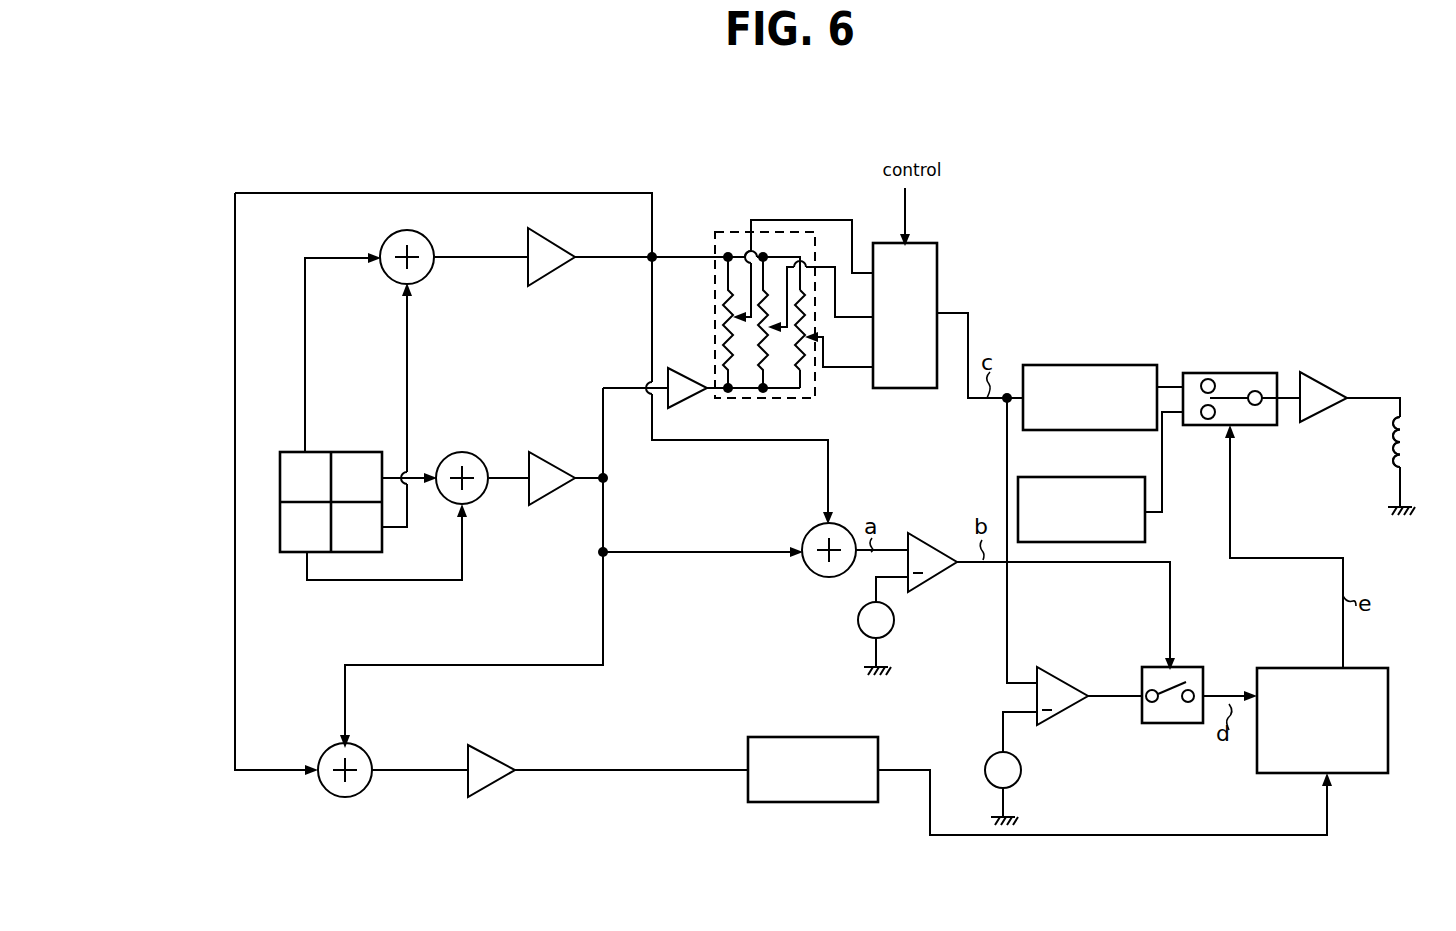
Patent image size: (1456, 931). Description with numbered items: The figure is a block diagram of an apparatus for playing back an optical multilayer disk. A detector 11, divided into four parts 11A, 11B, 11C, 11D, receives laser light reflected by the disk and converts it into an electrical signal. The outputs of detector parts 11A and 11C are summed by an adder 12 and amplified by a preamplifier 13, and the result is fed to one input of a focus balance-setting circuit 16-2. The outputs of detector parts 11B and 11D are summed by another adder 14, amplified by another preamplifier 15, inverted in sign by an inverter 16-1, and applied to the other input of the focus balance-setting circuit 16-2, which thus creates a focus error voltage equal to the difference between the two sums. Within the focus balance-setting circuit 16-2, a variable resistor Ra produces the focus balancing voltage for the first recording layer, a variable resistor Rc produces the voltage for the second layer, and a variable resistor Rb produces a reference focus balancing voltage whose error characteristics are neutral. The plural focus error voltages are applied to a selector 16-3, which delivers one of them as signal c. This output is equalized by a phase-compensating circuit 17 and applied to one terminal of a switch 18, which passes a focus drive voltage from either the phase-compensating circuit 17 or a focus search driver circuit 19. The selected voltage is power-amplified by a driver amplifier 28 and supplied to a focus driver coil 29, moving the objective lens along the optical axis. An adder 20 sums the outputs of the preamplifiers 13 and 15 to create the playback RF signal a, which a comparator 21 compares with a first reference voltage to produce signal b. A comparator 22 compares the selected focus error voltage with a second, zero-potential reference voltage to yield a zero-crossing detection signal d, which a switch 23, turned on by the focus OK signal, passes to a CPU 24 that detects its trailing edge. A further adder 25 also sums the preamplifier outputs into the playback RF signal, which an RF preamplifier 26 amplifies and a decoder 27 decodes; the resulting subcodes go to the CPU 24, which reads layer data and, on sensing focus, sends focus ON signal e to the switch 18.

The detector 11 is at (280, 490).
The detector part 11A is at (290, 452).
The detector part 11B is at (285, 554).
The detector part 11C is at (383, 534).
The detector part 11D is at (356, 452).
The adder 12 is at (431, 249).
The preamplifier 13 is at (526, 277).
The adder 14 is at (474, 503).
The preamplifier 15 is at (545, 500).
The inverter 16-1 is at (694, 402).
The focus balance-setting circuit 16-2 is at (718, 232).
The selector 16-3 is at (937, 256).
The phase-compensating circuit 17 is at (1105, 365).
The switch 18 is at (1225, 373).
The focus search driver circuit 19 is at (1145, 528).
The adder 20 is at (828, 578).
The comparator 21 is at (934, 538).
The comparator 22 is at (1068, 668).
The switch 23 is at (1157, 725).
The CPU 24 is at (1390, 718).
The adder 25 is at (350, 798).
The RF preamplifier 26 is at (480, 796).
The decoder 27 is at (820, 803).
The driver amplifier 28 is at (1320, 378).
The focus driver coil 29 is at (1388, 436).
The variable resistor Ra is at (726, 330).
The variable resistor Rb is at (758, 348).
The variable resistor Rc is at (794, 348).